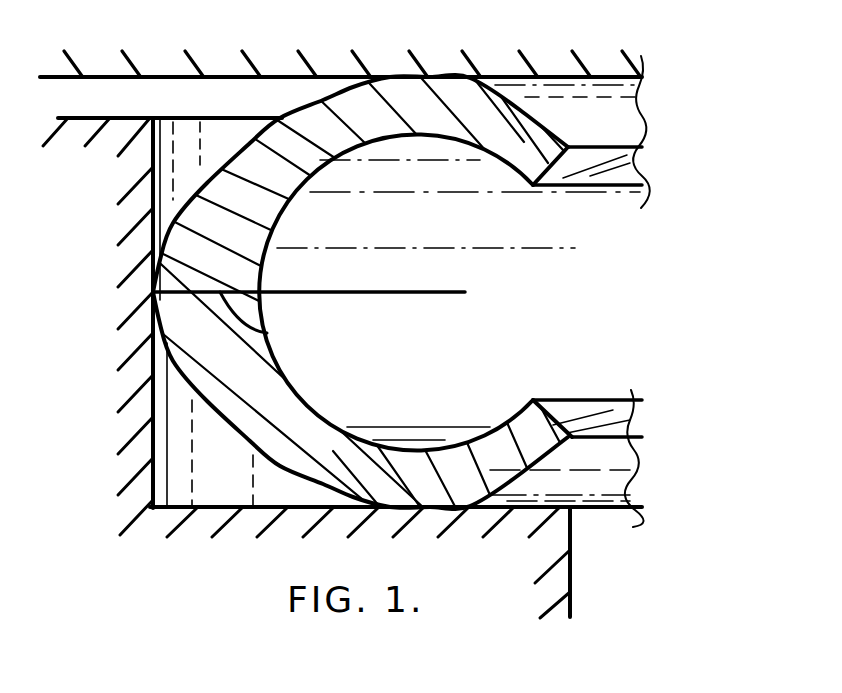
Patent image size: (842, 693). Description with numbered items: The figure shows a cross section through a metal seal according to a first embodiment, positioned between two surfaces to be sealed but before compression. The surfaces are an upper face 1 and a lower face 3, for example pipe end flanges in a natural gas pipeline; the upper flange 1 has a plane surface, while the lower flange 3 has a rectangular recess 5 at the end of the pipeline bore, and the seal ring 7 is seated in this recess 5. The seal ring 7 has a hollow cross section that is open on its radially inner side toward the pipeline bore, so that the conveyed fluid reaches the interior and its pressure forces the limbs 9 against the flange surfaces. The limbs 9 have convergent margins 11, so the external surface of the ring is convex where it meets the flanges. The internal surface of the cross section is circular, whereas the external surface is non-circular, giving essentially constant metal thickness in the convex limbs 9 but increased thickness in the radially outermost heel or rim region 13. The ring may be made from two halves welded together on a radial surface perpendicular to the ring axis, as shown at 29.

The upper face 1 is at (226, 42).
The lower face 3 is at (88, 453).
The rectangular recess 5 is at (211, 475).
The seal ring 7 is at (570, 128).
The limbs 9 is at (400, 113).
The convergent margins 11 is at (530, 156).
The heel or rim region 13 is at (280, 196).
The weld 29 is at (268, 334).